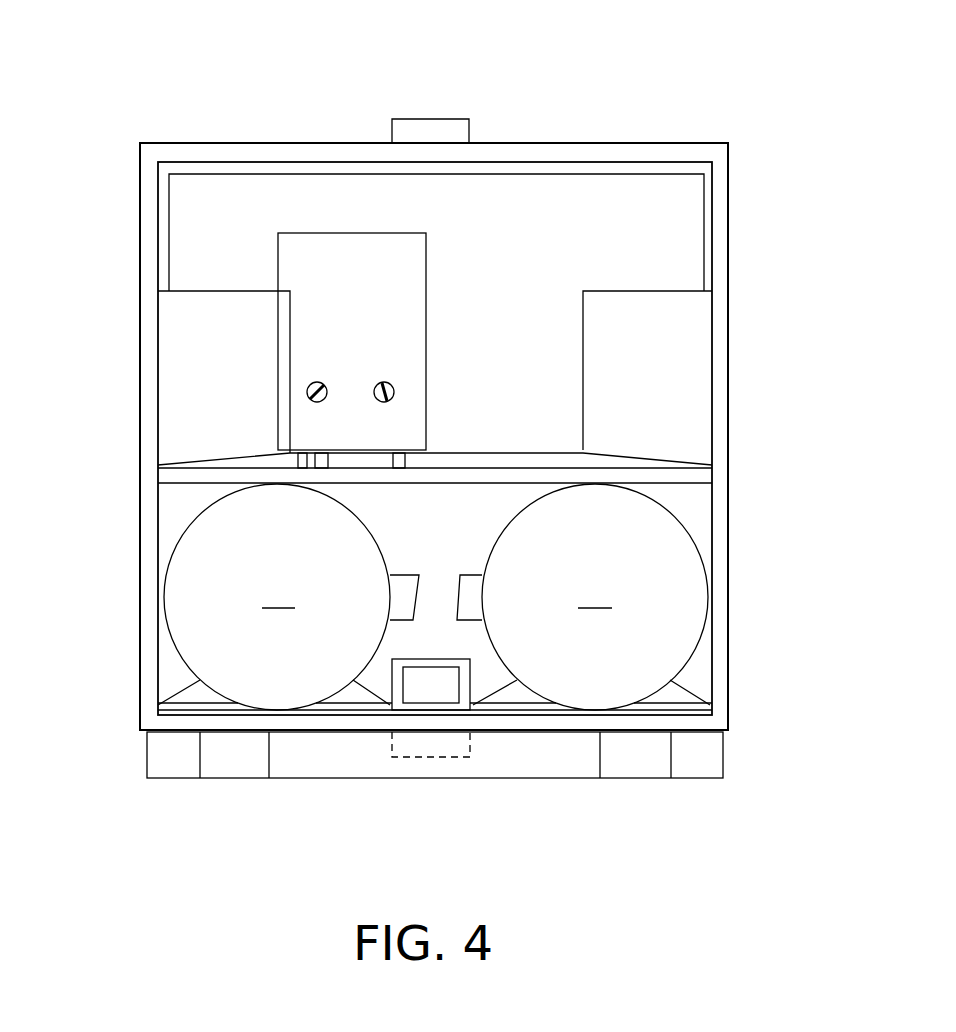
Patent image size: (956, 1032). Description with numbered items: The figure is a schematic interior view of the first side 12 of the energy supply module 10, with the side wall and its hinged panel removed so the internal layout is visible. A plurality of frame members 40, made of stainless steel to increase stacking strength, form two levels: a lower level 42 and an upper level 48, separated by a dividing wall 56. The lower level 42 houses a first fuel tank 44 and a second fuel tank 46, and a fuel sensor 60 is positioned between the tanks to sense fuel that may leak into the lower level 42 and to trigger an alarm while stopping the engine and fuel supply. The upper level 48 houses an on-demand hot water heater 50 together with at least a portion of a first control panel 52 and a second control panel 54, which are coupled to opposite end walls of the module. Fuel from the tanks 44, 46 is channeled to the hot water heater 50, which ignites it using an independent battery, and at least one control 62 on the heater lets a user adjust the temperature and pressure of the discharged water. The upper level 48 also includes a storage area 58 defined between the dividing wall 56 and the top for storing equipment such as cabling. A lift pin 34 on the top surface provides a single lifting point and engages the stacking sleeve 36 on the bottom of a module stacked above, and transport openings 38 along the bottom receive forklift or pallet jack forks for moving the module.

The energy supply module 10 is at (158, 91).
The first side 12 is at (176, 511).
The lift pin 34 is at (412, 128).
The stacking sleeve 36 is at (427, 748).
The transport openings 38 is at (640, 762).
The frame members 40 is at (728, 260).
The lower level 42 is at (708, 530).
The first fuel tank 44 is at (277, 597).
The second fuel tank 46 is at (595, 597).
The upper level 48 is at (547, 397).
The hot water heater 50 is at (337, 262).
The first control panel 52 is at (675, 316).
The second control panel 54 is at (203, 340).
The dividing wall 56 is at (463, 450).
The storage area 58 is at (673, 484).
The fuel sensor 60 is at (436, 687).
The control 62 is at (310, 399).